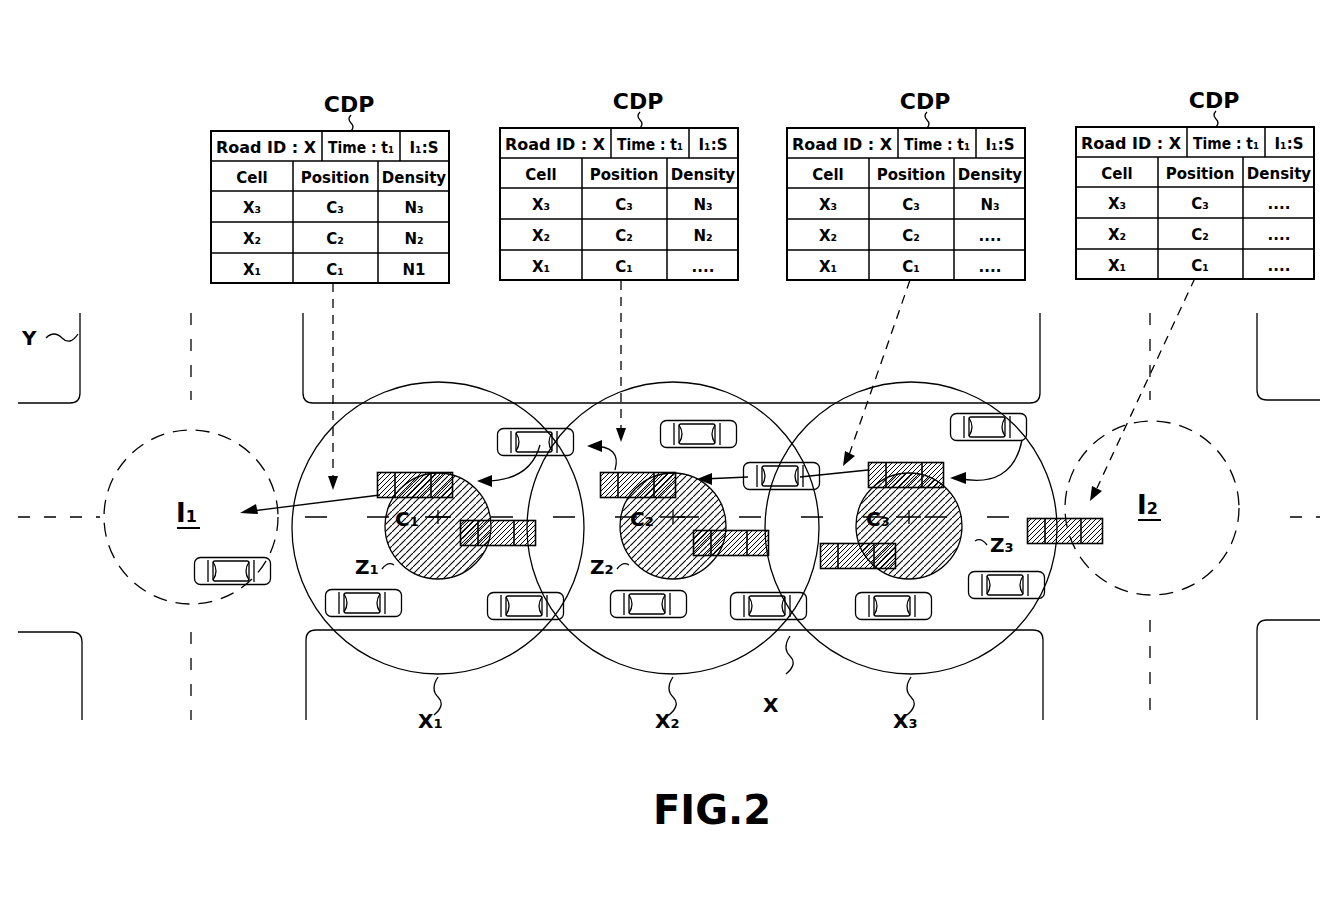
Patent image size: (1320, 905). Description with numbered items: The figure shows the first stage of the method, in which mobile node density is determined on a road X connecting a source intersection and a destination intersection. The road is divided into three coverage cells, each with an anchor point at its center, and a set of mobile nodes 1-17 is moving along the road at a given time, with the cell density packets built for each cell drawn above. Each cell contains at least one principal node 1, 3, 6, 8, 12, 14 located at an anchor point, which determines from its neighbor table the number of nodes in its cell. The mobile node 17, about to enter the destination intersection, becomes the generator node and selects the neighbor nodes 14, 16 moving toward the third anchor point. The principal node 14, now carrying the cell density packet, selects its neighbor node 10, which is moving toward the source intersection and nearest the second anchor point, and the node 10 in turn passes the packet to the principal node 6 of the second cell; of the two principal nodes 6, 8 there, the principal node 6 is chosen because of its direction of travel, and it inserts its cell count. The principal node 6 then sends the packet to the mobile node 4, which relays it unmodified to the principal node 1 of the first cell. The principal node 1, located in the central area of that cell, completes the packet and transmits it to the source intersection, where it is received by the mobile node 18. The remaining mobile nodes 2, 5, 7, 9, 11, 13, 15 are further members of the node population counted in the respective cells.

The principal node 1 is at (388, 482).
The mobile node 2 is at (380, 607).
The principal node 3 is at (520, 538).
The mobile node 4 is at (498, 443).
The mobile node 5 is at (492, 603).
The principal node 6 is at (602, 483).
The mobile node 7 is at (652, 606).
The principal node 8 is at (760, 554).
The mobile node 9 is at (668, 432).
The mobile node 10 is at (808, 470).
The mobile node 11 is at (760, 612).
The principal node 12 is at (856, 566).
The mobile node 13 is at (886, 606).
The principal node 14 is at (906, 468).
The mobile node 15 is at (1030, 588).
The mobile node 16 is at (1000, 428).
The generator node 17 is at (1096, 534).
The mobile node 18 is at (254, 580).